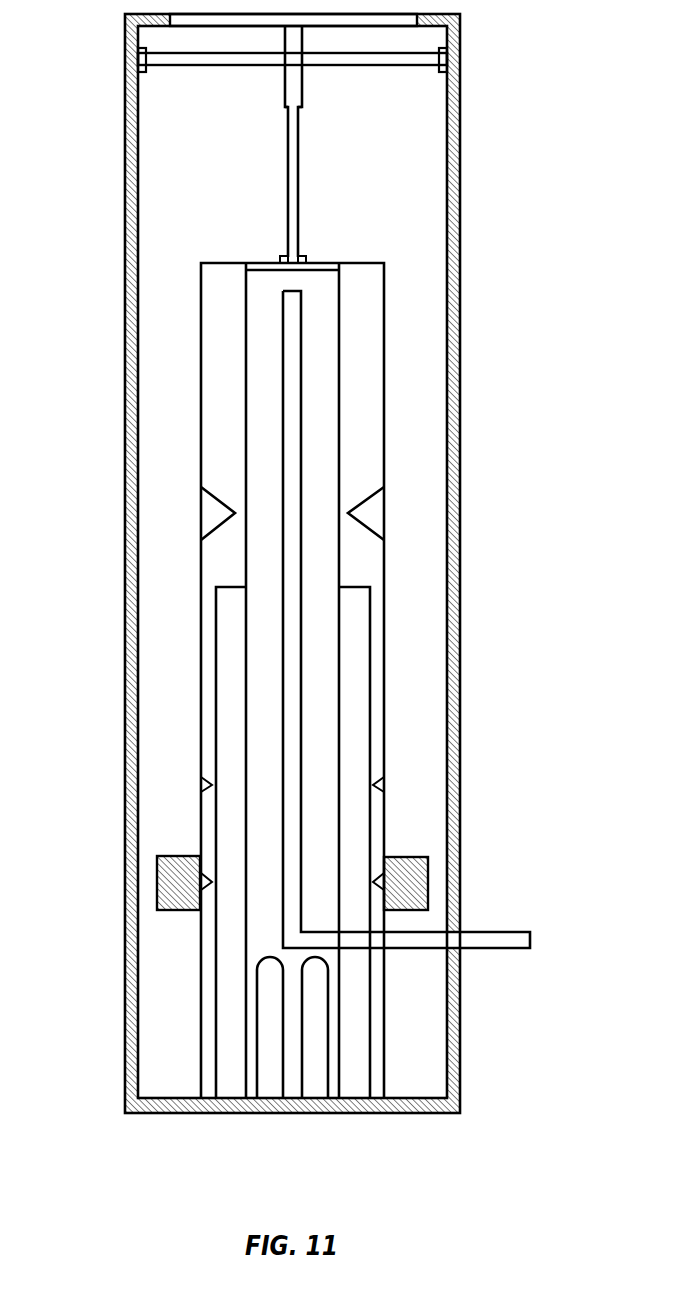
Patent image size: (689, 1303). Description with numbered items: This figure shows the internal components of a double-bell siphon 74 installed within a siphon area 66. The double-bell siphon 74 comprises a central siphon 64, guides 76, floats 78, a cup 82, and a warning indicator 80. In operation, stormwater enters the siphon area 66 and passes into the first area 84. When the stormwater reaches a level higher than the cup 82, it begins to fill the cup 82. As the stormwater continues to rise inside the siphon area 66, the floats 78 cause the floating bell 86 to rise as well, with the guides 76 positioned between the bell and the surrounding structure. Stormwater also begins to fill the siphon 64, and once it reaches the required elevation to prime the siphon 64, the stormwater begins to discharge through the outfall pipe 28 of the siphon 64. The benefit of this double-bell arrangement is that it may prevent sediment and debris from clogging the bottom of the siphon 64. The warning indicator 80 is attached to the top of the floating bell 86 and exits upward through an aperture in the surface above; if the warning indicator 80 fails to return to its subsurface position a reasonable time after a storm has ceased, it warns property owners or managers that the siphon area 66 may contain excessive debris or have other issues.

The outfall pipe 28 is at (483, 940).
The siphon 64 is at (322, 495).
The siphon area 66 is at (415, 628).
The double-bell siphon 74 is at (397, 392).
The guides 76 is at (377, 512).
The floats 78 is at (165, 885).
The warning indicator 80 is at (300, 190).
The cup 82 is at (230, 702).
The first area 84 is at (219, 565).
The floating bell 86 is at (201, 437).